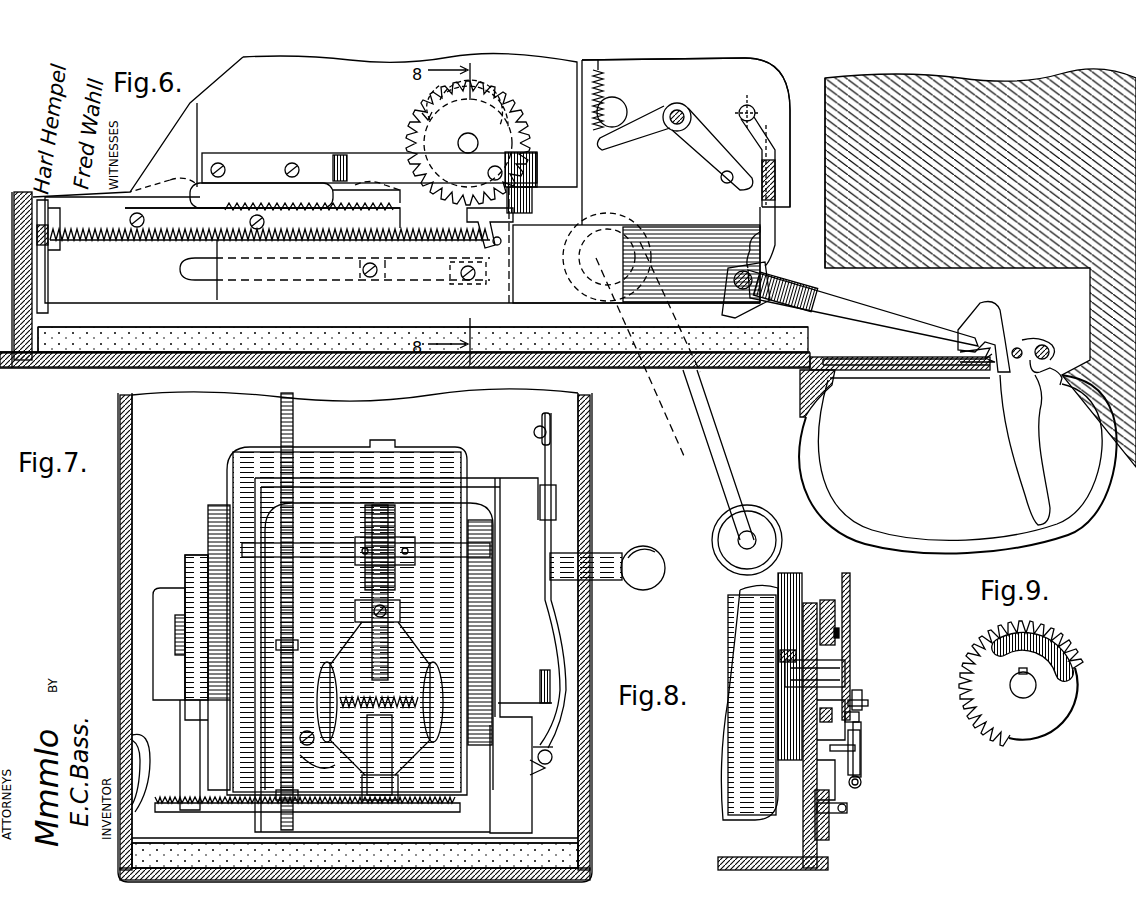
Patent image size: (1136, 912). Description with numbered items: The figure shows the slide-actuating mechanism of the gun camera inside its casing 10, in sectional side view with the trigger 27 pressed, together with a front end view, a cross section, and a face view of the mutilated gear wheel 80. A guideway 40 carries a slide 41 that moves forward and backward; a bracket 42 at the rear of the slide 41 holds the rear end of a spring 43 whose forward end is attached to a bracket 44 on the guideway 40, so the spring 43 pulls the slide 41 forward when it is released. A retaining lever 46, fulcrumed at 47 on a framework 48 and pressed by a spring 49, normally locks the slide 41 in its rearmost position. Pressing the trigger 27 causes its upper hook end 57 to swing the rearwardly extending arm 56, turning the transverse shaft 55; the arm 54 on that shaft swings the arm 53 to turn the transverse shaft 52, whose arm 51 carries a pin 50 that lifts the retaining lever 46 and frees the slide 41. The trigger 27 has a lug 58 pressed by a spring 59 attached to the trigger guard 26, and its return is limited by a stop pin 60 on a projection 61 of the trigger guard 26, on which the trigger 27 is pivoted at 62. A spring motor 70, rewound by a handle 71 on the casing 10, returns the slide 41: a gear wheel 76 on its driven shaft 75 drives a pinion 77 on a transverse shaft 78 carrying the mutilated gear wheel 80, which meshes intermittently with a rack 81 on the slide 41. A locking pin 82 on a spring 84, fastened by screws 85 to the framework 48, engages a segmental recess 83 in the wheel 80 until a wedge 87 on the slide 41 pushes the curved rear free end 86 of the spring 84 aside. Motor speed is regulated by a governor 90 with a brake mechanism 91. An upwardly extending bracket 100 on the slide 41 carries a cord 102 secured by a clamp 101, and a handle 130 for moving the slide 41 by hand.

In FIG. 6, the casing 10 is at (20, 368).
In FIG. 6, the trigger guard 26 is at (925, 540).
In FIG. 6, the trigger 27 is at (1040, 465).
In FIG. 6, the guideway 40 is at (664, 225).
In FIG. 8, the guideway 40 is at (810, 828).
In FIG. 6, the slide 41 is at (245, 220).
In FIG. 8, the slide 41 is at (835, 795).
In FIG. 6, the bracket 42 is at (482, 225).
In FIG. 8, the bracket 42 is at (860, 768).
In FIG. 6, the spring 43 is at (160, 242).
In FIG. 7, the spring 43 is at (553, 745).
In FIG. 8, the spring 43 is at (861, 782).
In FIG. 6, the bracket 44 is at (52, 245).
In FIG. 7, the bracket 44 is at (545, 770).
In FIG. 6, the retaining lever 46 is at (700, 140).
In FIG. 6, the fulcrum 47 is at (680, 103).
In FIG. 6, the framework 48 is at (790, 95).
In FIG. 7, the framework 48 is at (507, 487).
In FIG. 8, the framework 48 is at (830, 585).
In FIG. 6, the spring 49 is at (605, 80).
In FIG. 6, the pin 50 is at (716, 185).
In FIG. 6, the arm 51 is at (768, 140).
In FIG. 6, the transverse shaft 52 is at (747, 103).
In FIG. 6, the arm 53 is at (768, 228).
In FIG. 6, the arm 54 is at (768, 252).
In FIG. 6, the transverse shaft 55 is at (746, 290).
In FIG. 6, the rearwardly extending arm 56 is at (868, 305).
In FIG. 6, the upper hook end 57 is at (980, 315).
In FIG. 6, the lug 58 is at (958, 350).
In FIG. 6, the spring 59 is at (898, 359).
In FIG. 6, the stop pin 60 is at (1018, 345).
In FIG. 6, the projection 61 is at (1058, 368).
In FIG. 6, the pivot 62 is at (1050, 340).
In FIG. 7, the motor 70 is at (425, 455).
In FIG. 8, the motor 70 is at (750, 633).
In FIG. 6, the handle 71 is at (700, 418).
In FIG. 7, the handle 71 is at (125, 730).
In FIG. 6, the driven shaft 75 is at (625, 108).
In FIG. 8, the gear wheel 76 is at (790, 590).
In FIG. 8, the pinion 77 is at (780, 656).
In FIG. 6, the transverse shaft 78 is at (462, 140).
In FIG. 8, the transverse shaft 78 is at (840, 676).
In FIG. 6, the mutilated gear wheel 80 is at (520, 110).
In FIG. 8, the mutilated gear wheel 80 is at (840, 620).
In FIG. 9, the mutilated gear wheel 80 is at (1062, 630).
In FIG. 6, the rack 81 is at (295, 203).
In FIG. 8, the rack 81 is at (855, 752).
In FIG. 6, the locking pin 82 is at (483, 171).
In FIG. 8, the locking pin 82 is at (868, 708).
In FIG. 6, the segmental recess 83 is at (505, 129).
In FIG. 8, the segmental recess 83 is at (840, 636).
In FIG. 9, the segmental recess 83 is at (1070, 670).
In FIG. 6, the spring 84 is at (348, 160).
In FIG. 7, the spring 84 is at (540, 686).
In FIG. 8, the spring 84 is at (859, 722).
In FIG. 6, the screws 85 is at (220, 162).
In FIG. 6, the rear free end 86 is at (537, 168).
In FIG. 8, the rear free end 86 is at (862, 695).
In FIG. 6, the wedge 87 is at (532, 200).
In FIG. 8, the wedge 87 is at (861, 737).
In FIG. 7, the governor 90 is at (392, 650).
In FIG. 7, the brake mechanism 91 is at (293, 418).
In FIG. 6, the bracket 100 is at (175, 183).
In FIG. 7, the bracket 100 is at (552, 462).
In FIG. 7, the clamp 101 is at (534, 432).
In FIG. 7, the cord 102 is at (560, 410).
In FIG. 7, the handle 130 is at (608, 553).